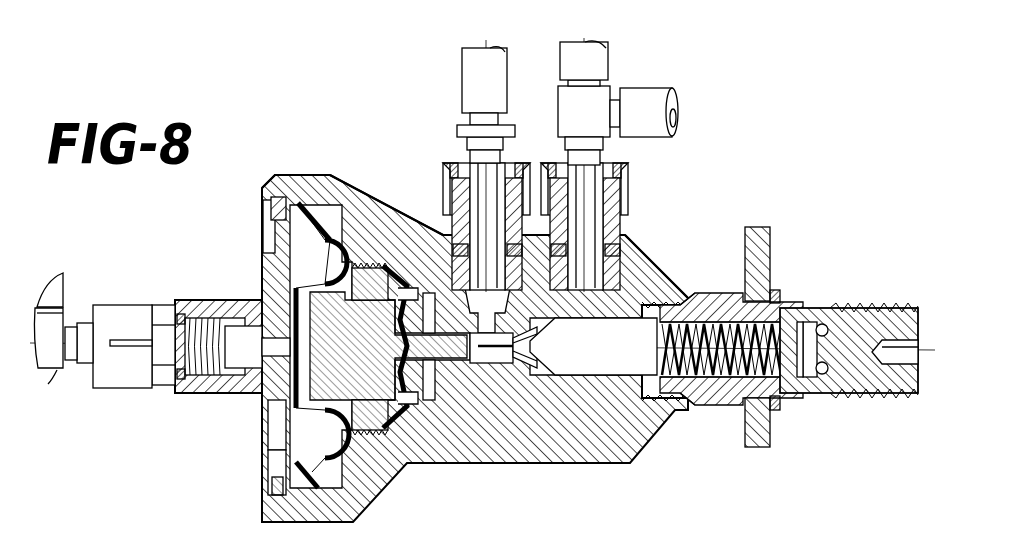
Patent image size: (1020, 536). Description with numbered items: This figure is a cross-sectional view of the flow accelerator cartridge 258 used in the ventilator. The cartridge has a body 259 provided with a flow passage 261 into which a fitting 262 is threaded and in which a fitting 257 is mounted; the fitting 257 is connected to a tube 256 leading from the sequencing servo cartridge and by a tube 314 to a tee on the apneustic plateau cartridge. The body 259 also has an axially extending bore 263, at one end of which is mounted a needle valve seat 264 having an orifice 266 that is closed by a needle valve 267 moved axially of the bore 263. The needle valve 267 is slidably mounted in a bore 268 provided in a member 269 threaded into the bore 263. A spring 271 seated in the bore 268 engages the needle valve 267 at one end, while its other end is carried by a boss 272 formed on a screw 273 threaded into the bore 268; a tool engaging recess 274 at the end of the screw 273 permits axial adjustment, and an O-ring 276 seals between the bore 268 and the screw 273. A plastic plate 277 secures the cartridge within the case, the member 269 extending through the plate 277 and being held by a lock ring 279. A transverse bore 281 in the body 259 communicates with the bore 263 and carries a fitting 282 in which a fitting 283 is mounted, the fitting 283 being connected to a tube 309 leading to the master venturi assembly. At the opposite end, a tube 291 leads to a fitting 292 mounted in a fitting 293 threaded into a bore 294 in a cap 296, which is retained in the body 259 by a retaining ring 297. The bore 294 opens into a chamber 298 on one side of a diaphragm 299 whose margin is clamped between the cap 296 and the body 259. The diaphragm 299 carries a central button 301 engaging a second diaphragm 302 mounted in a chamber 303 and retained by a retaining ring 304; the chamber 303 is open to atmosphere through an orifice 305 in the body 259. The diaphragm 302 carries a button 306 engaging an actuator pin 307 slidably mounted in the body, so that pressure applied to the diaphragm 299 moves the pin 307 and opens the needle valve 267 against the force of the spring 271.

The flow accelerator cartridge 258 is at (286, 150).
The chamber 303 is at (343, 257).
The orifice 305 is at (377, 213).
The fitting 282 is at (452, 230).
The bore 281 is at (445, 305).
The button 301 is at (318, 318).
The tube 291 is at (62, 292).
The fitting 292 is at (46, 360).
The fitting 293 is at (170, 386).
The bore 294 is at (250, 394).
The cap 296 is at (266, 433).
The chamber 298 is at (266, 462).
The retaining ring 297 is at (268, 505).
The diaphragm 299 is at (366, 369).
The retaining ring 304 is at (362, 446).
The diaphragm 302 is at (438, 466).
The actuator pin 307 is at (456, 370).
The button 306 is at (434, 395).
The orifice 266 is at (522, 392).
The needle valve seat 264 is at (538, 380).
The body 259 is at (545, 465).
The needle valve 267 is at (577, 364).
The bore 268 is at (712, 368).
The spring 271 is at (735, 372).
The boss 272 is at (787, 360).
The screw 273 is at (862, 372).
The tool engaging recess 274 is at (924, 354).
The O-ring 276 is at (816, 330).
The plate 277 is at (760, 254).
The lock ring 279 is at (777, 293).
The member 269 is at (718, 296).
The fitting 262 is at (627, 229).
The flow passage 261 is at (615, 300).
The bore 263 is at (666, 290).
The tube 309 is at (467, 73).
The tube 314 is at (573, 50).
The fitting 257 is at (563, 100).
The tube 256 is at (657, 100).
The fitting 283 is at (457, 130).